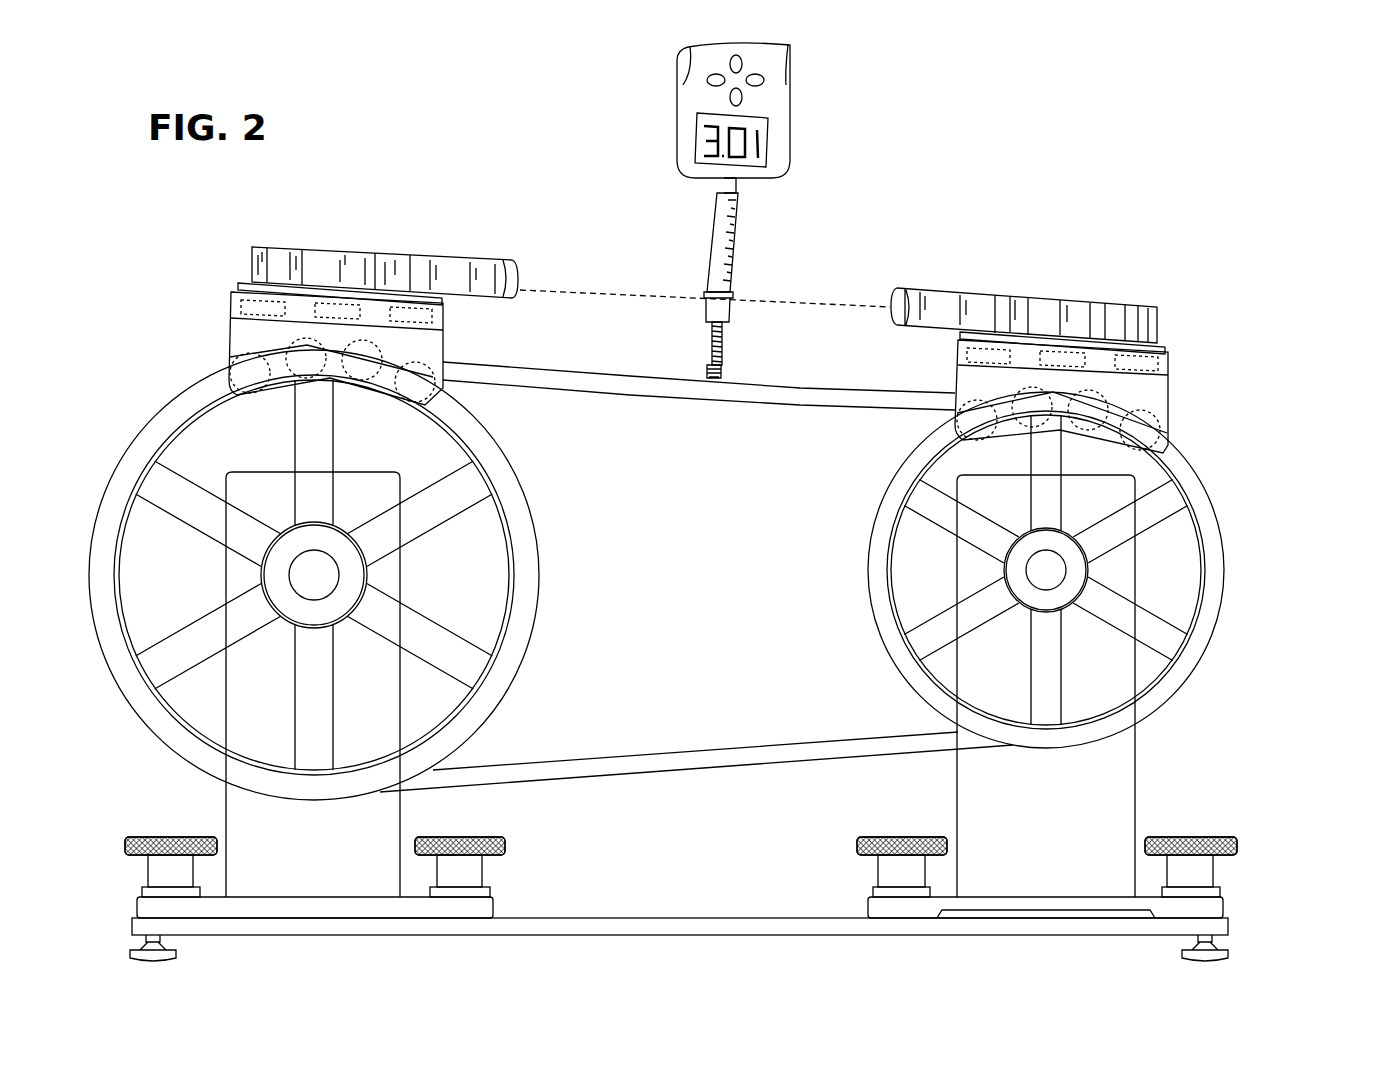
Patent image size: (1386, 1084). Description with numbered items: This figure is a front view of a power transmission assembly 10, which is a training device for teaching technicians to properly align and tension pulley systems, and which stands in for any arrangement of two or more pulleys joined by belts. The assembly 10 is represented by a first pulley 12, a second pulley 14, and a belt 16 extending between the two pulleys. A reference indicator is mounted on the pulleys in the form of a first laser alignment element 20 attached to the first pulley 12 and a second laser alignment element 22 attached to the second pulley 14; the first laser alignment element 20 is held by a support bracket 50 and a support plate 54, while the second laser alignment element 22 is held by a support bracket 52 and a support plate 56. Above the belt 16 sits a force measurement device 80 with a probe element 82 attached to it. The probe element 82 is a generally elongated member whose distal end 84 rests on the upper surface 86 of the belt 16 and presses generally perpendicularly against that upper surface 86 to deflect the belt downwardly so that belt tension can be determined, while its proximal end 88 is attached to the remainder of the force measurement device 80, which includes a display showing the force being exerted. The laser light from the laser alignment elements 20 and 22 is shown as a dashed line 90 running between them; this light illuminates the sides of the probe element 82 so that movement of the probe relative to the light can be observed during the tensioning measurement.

The power transmission assembly 10 is at (1248, 476).
The first pulley 12 is at (500, 685).
The second pulley 14 is at (1207, 630).
The belt 16 is at (696, 565).
The first laser alignment element 20 is at (420, 265).
The second laser alignment element 22 is at (1018, 308).
The support bracket 50 is at (428, 345).
The support bracket 52 is at (1145, 392).
The support plate 54 is at (443, 300).
The support plate 56 is at (1170, 350).
The force measurement device 80 is at (780, 108).
The probe element 82 is at (738, 258).
The distal end 84 is at (722, 372).
The upper surface 86 is at (812, 387).
The proximal end 88 is at (737, 186).
The dashed line 90 is at (818, 300).